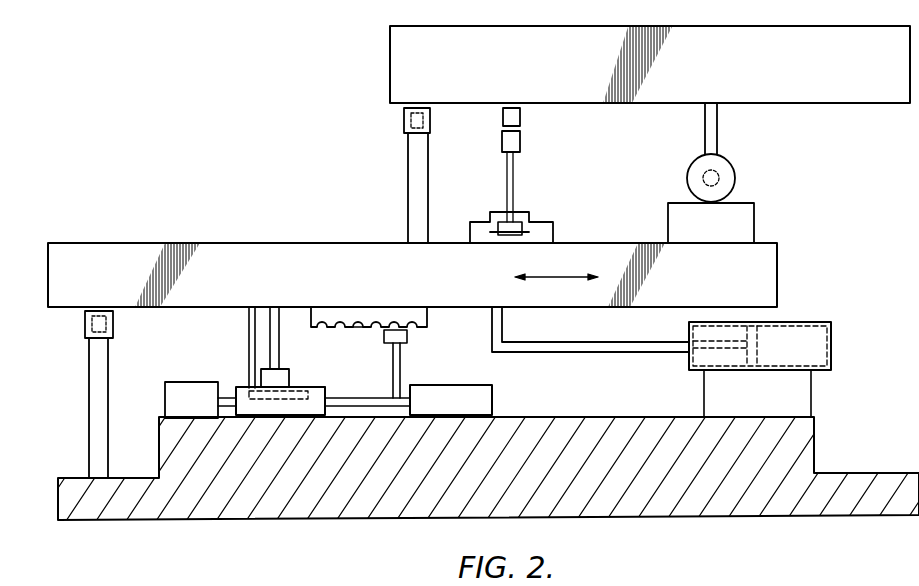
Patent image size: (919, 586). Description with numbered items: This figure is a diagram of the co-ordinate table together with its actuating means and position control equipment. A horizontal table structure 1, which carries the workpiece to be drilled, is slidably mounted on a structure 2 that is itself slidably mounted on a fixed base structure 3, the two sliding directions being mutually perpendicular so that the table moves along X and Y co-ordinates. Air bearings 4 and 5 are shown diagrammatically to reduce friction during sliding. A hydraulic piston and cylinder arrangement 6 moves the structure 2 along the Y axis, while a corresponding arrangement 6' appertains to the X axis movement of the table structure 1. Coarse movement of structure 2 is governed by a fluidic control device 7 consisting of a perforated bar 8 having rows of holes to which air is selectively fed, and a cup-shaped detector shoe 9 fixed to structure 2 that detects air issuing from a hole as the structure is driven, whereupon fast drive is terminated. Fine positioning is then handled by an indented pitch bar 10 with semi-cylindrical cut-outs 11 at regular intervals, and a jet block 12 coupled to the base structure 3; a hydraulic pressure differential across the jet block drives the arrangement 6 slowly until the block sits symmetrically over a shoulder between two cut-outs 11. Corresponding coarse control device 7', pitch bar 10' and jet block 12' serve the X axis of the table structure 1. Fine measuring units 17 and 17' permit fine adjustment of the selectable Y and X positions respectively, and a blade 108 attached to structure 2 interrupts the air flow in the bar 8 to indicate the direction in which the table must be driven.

The horizontal table structure 1 is at (770, 34).
The structure 2 is at (762, 272).
The fixed base structure 3 is at (800, 455).
The air bearing 4 is at (85, 318).
The air bearing 5 is at (404, 124).
The hydraulic piston and cylinder arrangement 6 is at (676, 362).
The hydraulic piston and cylinder arrangement 6' is at (719, 173).
The coarse position control device 7 is at (324, 373).
The coarse position control device 7' is at (502, 219).
The perforated bar 8 is at (315, 401).
The detector shoe 9 is at (285, 374).
The indented pitch bar 10 is at (390, 322).
The indented pitch bar 10' is at (535, 121).
The semi-cylindrical indentations 11 is at (358, 325).
The jet block 12 is at (414, 364).
The jet block 12' is at (534, 176).
The fine measuring unit 17 is at (472, 400).
The fine measuring unit 17' is at (534, 215).
The blade 108 is at (258, 390).